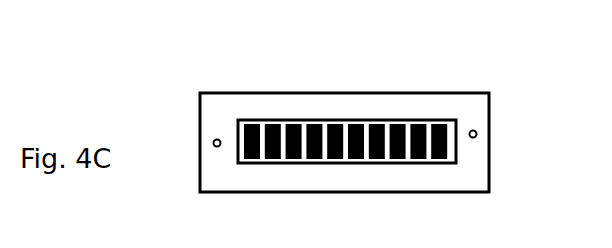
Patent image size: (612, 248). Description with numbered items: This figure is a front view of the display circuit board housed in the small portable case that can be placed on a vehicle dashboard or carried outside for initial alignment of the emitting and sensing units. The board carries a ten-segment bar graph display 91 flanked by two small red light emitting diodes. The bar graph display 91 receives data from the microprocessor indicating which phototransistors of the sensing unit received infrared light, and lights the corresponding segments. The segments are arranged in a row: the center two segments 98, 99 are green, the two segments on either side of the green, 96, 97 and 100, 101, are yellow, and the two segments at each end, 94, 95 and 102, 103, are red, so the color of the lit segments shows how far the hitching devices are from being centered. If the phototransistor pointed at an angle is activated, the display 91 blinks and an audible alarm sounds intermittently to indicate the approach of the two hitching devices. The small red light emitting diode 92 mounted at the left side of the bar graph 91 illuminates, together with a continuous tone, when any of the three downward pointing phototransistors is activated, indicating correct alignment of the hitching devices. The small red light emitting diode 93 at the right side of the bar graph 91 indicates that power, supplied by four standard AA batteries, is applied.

The ten-segment bar graph display 91 is at (459, 118).
The red light emitting diode 92 is at (213, 142).
The red light emitting diode 93 is at (477, 134).
The red end segment 94 is at (252, 124).
The red end segment 95 is at (276, 124).
The yellow segment 96 is at (297, 124).
The yellow segment 97 is at (315, 160).
The green center segment 98 is at (335, 160).
The green center segment 99 is at (351, 124).
The yellow segment 100 is at (377, 160).
The yellow segment 101 is at (394, 124).
The red end segment 102 is at (418, 160).
The red end segment 103 is at (440, 124).